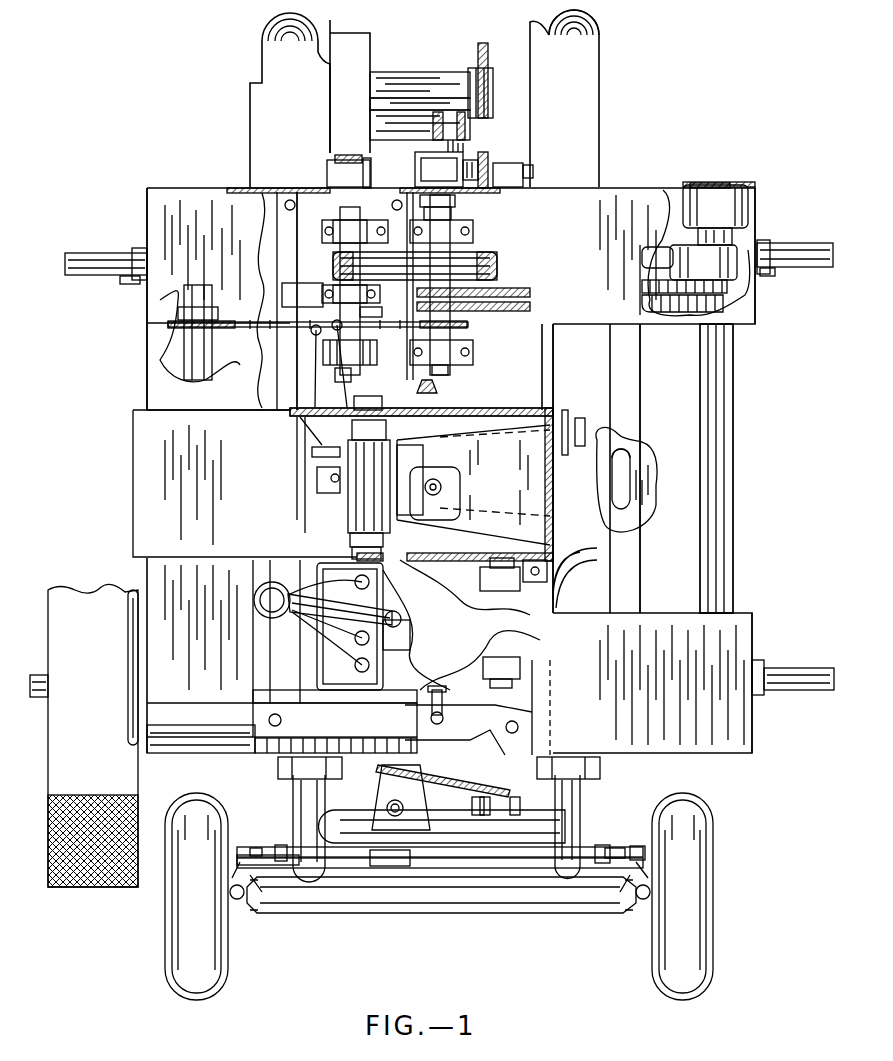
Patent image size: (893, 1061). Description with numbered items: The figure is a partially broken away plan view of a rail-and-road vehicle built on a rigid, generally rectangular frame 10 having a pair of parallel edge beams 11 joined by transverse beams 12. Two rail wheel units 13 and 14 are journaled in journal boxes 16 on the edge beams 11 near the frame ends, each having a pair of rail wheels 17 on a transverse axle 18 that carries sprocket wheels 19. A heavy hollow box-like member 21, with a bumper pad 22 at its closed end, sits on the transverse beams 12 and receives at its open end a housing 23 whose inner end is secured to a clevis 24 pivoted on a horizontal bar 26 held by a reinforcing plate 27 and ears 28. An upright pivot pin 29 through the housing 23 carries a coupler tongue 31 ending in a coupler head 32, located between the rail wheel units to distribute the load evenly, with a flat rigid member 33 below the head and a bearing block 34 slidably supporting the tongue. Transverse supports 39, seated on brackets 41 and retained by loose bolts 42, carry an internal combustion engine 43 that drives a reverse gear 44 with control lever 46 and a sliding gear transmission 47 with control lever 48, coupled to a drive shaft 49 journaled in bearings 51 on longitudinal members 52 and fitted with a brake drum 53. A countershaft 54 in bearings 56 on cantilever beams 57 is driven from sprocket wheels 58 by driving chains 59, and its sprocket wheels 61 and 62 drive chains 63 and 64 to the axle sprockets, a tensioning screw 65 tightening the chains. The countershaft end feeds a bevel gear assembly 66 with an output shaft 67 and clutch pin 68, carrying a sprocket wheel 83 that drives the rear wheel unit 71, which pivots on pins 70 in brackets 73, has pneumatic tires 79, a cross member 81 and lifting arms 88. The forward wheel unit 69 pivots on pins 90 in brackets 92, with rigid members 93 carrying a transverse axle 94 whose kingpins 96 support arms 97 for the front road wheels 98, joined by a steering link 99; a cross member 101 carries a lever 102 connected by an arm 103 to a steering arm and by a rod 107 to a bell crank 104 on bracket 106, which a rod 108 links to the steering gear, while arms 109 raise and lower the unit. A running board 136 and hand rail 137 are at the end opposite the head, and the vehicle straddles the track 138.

The frame 10 is at (719, 178).
The edge beams 11 is at (748, 186).
The transverse beams 12 is at (147, 330).
The rail wheel unit 13 is at (720, 405).
The rail wheel unit 14 is at (182, 350).
The journal boxes 16 is at (748, 212).
The rail wheels 17 is at (770, 270).
The transverse axle 18 is at (205, 352).
The sprocket wheels 19 is at (213, 305).
The hollow box-like member 21 is at (476, 410).
The bumper pad 22 is at (134, 475).
The housing 23 is at (470, 442).
The clevis 24 is at (386, 452).
The transverse bar 26 is at (383, 414).
The reinforcing plate 27 is at (340, 520).
The ears 28 is at (352, 540).
The upright pivot pin 29 is at (440, 488).
The coupler tongue 31 is at (436, 475).
The coupler head 32 is at (646, 505).
The flat rigid member 33 is at (615, 450).
The bearing block 34 is at (568, 420).
The transverse supports 39 is at (412, 628).
The brackets 41 is at (297, 193).
The bolts 42 is at (283, 205).
The internal combustion engine 43 is at (385, 660).
The reverse gear 44 is at (318, 480).
The control lever 46 is at (312, 448).
The sliding gear transmission 47 is at (297, 430).
The control lever 48 is at (340, 374).
The drive shaft 49 is at (336, 245).
The bearings 51 is at (342, 228).
The longitudinal members 52 is at (297, 283).
The brake drum 53 is at (375, 350).
The countershaft 54 is at (462, 255).
The bearings 56 is at (448, 232).
The cantilever beams 57 is at (490, 243).
The sprocket wheels 58 is at (470, 288).
The driving chains 59 is at (430, 262).
The sprocket wheel 61 is at (416, 298).
The sprocket wheel 62 is at (425, 365).
The chain 63 is at (676, 312).
The chain 64 is at (242, 322).
The tensioning screw 65 is at (365, 160).
The bevel gear assembly 66 is at (421, 165).
The output shaft 67 is at (497, 170).
The reciprocal pin 68 is at (452, 112).
The forward wheel unit 69 is at (400, 915).
The pins 70 is at (533, 172).
The rear wheel unit 71 is at (415, 58).
The brackets 73 is at (327, 170).
The pneumatic tires 79 is at (585, 30).
The cross member 81 is at (390, 120).
The sprocket wheel 83 is at (484, 155).
The arms 88 is at (437, 115).
The pivot pins 90 is at (278, 768).
The brackets 92 is at (590, 772).
The rigid members 93 is at (573, 818).
The transverse axle 94 is at (520, 880).
The kingpins 96 is at (640, 900).
The arms 97 is at (238, 900).
The front road wheels 98 is at (707, 870).
The steering link 99 is at (262, 855).
The cross member 101 is at (440, 822).
The lever 102 is at (403, 785).
The arm 103 is at (596, 846).
The bell crank 104 is at (515, 706).
The bracket 106 is at (519, 727).
The rod 107 is at (420, 775).
The rod 108 is at (456, 704).
The arms 109 is at (484, 812).
The running board 136 is at (96, 755).
The hand rail 137 is at (128, 622).
The track 138 is at (778, 690).